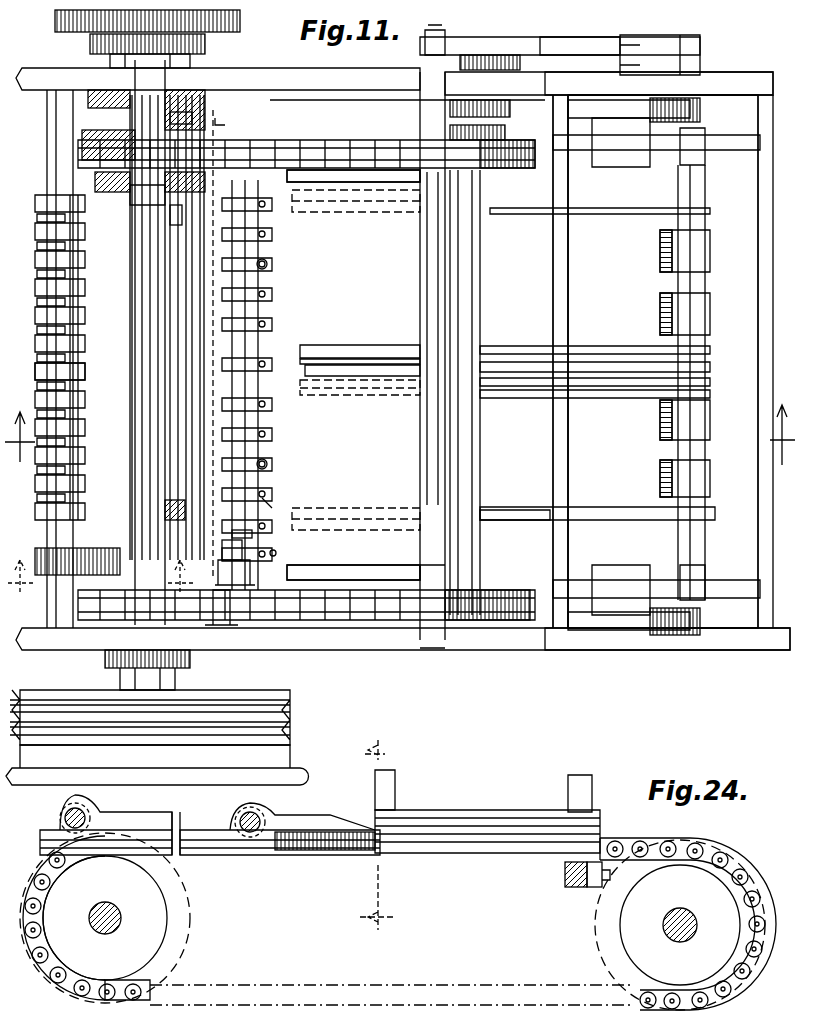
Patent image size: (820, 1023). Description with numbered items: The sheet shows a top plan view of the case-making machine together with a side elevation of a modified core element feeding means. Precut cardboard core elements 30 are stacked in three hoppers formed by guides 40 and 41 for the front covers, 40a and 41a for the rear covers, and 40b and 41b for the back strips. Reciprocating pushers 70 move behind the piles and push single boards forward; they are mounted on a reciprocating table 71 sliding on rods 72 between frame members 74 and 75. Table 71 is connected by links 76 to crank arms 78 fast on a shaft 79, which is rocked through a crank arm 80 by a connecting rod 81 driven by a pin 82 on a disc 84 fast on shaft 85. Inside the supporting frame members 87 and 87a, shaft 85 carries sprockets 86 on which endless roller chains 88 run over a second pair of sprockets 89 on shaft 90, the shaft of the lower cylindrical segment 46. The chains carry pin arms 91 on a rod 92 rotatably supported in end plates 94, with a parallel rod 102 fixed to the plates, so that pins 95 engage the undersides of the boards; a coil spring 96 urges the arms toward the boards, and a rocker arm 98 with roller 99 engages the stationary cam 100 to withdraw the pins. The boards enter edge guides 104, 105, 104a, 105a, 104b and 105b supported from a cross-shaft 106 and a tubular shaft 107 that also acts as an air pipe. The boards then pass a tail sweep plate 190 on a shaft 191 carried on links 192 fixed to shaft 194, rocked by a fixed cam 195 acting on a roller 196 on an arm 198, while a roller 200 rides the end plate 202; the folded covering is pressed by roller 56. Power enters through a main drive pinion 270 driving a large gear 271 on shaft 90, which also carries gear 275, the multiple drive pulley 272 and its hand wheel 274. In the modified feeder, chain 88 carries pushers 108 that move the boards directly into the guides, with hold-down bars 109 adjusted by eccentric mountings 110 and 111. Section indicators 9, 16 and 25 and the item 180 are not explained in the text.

In FIG. 11, the main drive pinion 270 is at (56, 14).
In FIG. 11, the large gear 271 is at (240, 20).
In FIG. 11, the gear 275 is at (205, 45).
In FIG. 11, the fixed cam 195 is at (95, 90).
In FIG. 11, the roller 196 is at (190, 95).
In FIG. 11, the arm 198 is at (195, 118).
In FIG. 11, the tubular shaft 107 is at (228, 126).
In FIG. 11, the sprockets 89 is at (82, 148).
In FIG. 24, the sprockets 89 is at (190, 918).
In FIG. 11, the end plate 202 is at (95, 178).
In FIG. 11, the roller 200 is at (150, 200).
In FIG. 11, the links 192 is at (170, 218).
In FIG. 11, the tail sweep plate 190 is at (160, 418).
In FIG. 11, the shaft 191 is at (170, 388).
In FIG. 11, the shaft 194 is at (186, 305).
In FIG. 11, the lower cylindrical segment 46 is at (200, 248).
In FIG. 11, the shaft 90 is at (135, 335).
In FIG. 24, the shaft 90 is at (120, 912).
In FIG. 11, the chain 180 is at (40, 333).
In FIG. 11, the pressure roller 56 is at (38, 375).
In FIG. 11, the stationary cam 100 is at (90, 558).
In FIG. 11, the section line 16 is at (104, 581).
In FIG. 11, the section line 9 is at (399, 443).
In FIG. 11, the pin arms 91 is at (272, 300).
In FIG. 11, the pins 95 is at (270, 258).
In FIG. 11, the roller 99 is at (276, 553).
In FIG. 11, the rod 92 is at (254, 538).
In FIG. 11, the rod 102 is at (280, 504).
In FIG. 11, the rocker arm 98 is at (232, 548).
In FIG. 11, the coil spring 96 is at (225, 572).
In FIG. 11, the edge guide 105a is at (398, 215).
In FIG. 11, the edge guide 104a is at (345, 345).
In FIG. 11, the edge guide 105b is at (383, 360).
In FIG. 11, the edge guide 105 is at (352, 378).
In FIG. 24, the edge guide 105 is at (280, 855).
In FIG. 11, the edge guide 104b is at (395, 392).
In FIG. 11, the edge guide 104 is at (390, 498).
In FIG. 11, the cross-shaft 106 is at (430, 455).
In FIG. 11, the end plates 94 is at (288, 170).
In FIG. 11, the endless roller chains 88 is at (380, 140).
In FIG. 24, the endless roller chains 88 is at (705, 835).
In FIG. 11, the sprockets 86 is at (478, 155).
In FIG. 24, the sprockets 86 is at (595, 935).
In FIG. 11, the shaft 85 is at (470, 118).
In FIG. 24, the shaft 85 is at (668, 914).
In FIG. 11, the pin 82 is at (445, 30).
In FIG. 11, the disc 84 is at (470, 55).
In FIG. 11, the connecting rod 81 is at (595, 42).
In FIG. 11, the supporting frame member 87 is at (550, 78).
In FIG. 11, the supporting frame member 87a is at (585, 640).
In FIG. 11, the crank arm 80 is at (645, 37).
In FIG. 11, the links 76 is at (605, 105).
In FIG. 11, the crank arms 78 is at (700, 110).
In FIG. 11, the shaft 79 is at (650, 152).
In FIG. 11, the rods 72 is at (738, 150).
In FIG. 11, the frame member 75 is at (710, 238).
In FIG. 11, the reciprocating pushers 70 is at (660, 300).
In FIG. 11, the guide 41a is at (490, 216).
In FIG. 11, the frame member 74 is at (553, 278).
In FIG. 11, the guide 40a is at (490, 345).
In FIG. 11, the guide 41b is at (712, 362).
In FIG. 11, the guide 40b is at (712, 385).
In FIG. 11, the guide 41 is at (488, 398).
In FIG. 24, the guide 41 is at (572, 780).
In FIG. 11, the guide 40 is at (485, 513).
In FIG. 24, the guide 40 is at (395, 790).
In FIG. 11, the reciprocating table 71 is at (585, 425).
In FIG. 11, the multiple drive pulley 272 is at (290, 712).
In FIG. 11, the hand wheel 274 is at (300, 775).
In FIG. 24, the eccentric mounting 110 is at (62, 808).
In FIG. 24, the hold-down bars 109 is at (170, 815).
In FIG. 24, the eccentric mounting 111 is at (275, 820).
In FIG. 24, the core elements 30 is at (495, 810).
In FIG. 24, the section line 25 is at (382, 838).
In FIG. 24, the pushers 108 is at (510, 870).